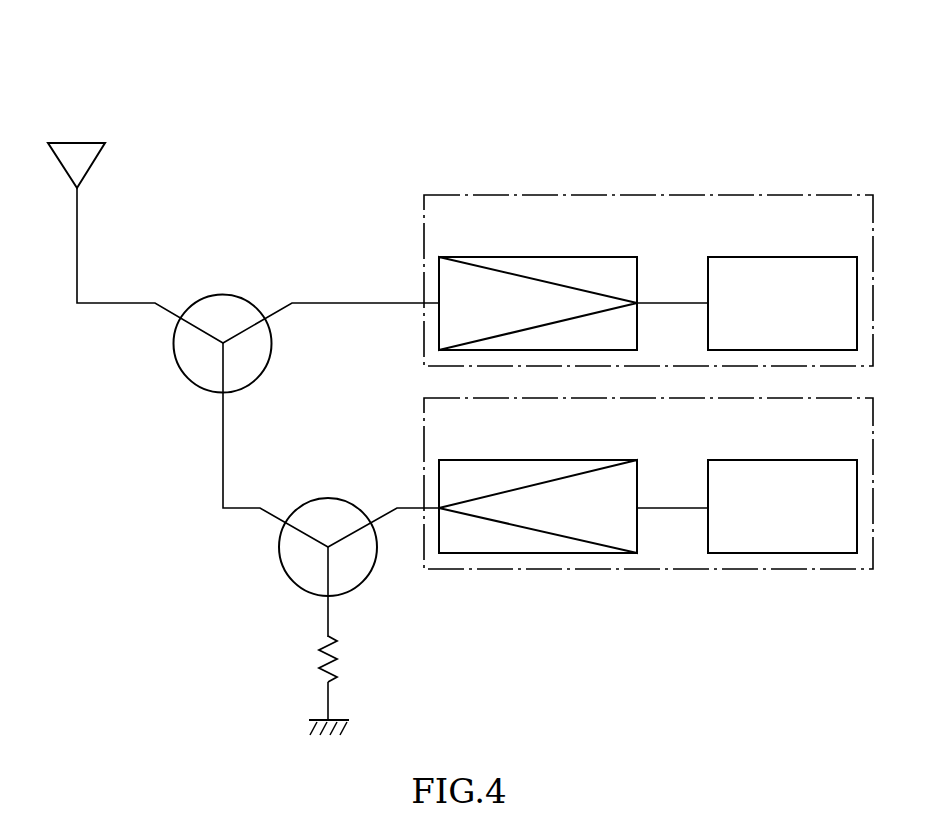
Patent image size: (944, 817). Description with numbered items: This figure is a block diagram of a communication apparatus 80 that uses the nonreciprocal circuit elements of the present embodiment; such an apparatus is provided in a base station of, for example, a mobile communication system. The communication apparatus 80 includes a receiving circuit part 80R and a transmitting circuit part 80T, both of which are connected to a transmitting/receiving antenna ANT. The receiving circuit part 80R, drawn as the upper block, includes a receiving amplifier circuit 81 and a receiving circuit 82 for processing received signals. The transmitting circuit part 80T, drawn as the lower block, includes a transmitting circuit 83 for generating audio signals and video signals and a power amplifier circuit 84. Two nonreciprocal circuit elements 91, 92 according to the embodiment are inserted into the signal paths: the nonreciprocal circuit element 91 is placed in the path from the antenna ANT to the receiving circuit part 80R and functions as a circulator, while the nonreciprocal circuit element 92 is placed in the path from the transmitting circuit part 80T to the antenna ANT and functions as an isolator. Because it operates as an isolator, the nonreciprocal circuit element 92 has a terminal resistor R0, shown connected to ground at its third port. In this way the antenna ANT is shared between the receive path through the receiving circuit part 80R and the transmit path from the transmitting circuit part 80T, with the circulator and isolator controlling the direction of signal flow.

The communication apparatus 80 is at (764, 42).
The transmitting/receiving antenna ANT is at (77, 143).
The nonreciprocal circuit element 91 is at (223, 295).
The nonreciprocal circuit element 92 is at (329, 498).
The terminal resistor R0 is at (340, 667).
The receiving circuit part 80R is at (648, 195).
The receiving amplifier circuit 81 is at (539, 257).
The receiving circuit 82 is at (784, 257).
The transmitting circuit part 80T is at (650, 570).
The power amplifier circuit 84 is at (539, 460).
The transmitting circuit 83 is at (784, 460).